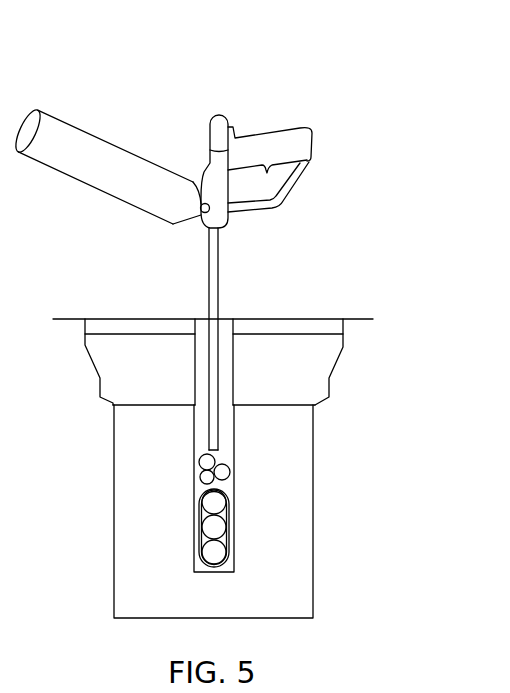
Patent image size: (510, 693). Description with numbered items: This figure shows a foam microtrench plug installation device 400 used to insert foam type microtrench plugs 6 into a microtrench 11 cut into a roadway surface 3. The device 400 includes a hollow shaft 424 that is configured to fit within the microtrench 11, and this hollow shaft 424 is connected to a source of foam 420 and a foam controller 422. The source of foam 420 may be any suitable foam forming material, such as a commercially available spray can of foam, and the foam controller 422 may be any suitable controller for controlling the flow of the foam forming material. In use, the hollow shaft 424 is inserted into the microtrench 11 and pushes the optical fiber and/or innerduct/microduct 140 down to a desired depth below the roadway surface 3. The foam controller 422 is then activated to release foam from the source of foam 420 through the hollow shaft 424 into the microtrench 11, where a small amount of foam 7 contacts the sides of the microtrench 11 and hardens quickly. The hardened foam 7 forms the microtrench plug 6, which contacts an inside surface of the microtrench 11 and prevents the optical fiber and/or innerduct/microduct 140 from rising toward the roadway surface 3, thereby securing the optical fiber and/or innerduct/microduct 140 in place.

The roadway surface 3 is at (108, 318).
The microtrench plug 6 is at (197, 468).
The foam plug 7 is at (230, 463).
The microtrench 11 is at (198, 423).
The optical fiber and/or innerduct/microduct 140 is at (198, 532).
The foam microtrench plug installation device 400 is at (181, 243).
The source of foam 420 is at (80, 137).
The foam controller 422 is at (292, 135).
The hollow shaft 424 is at (203, 370).